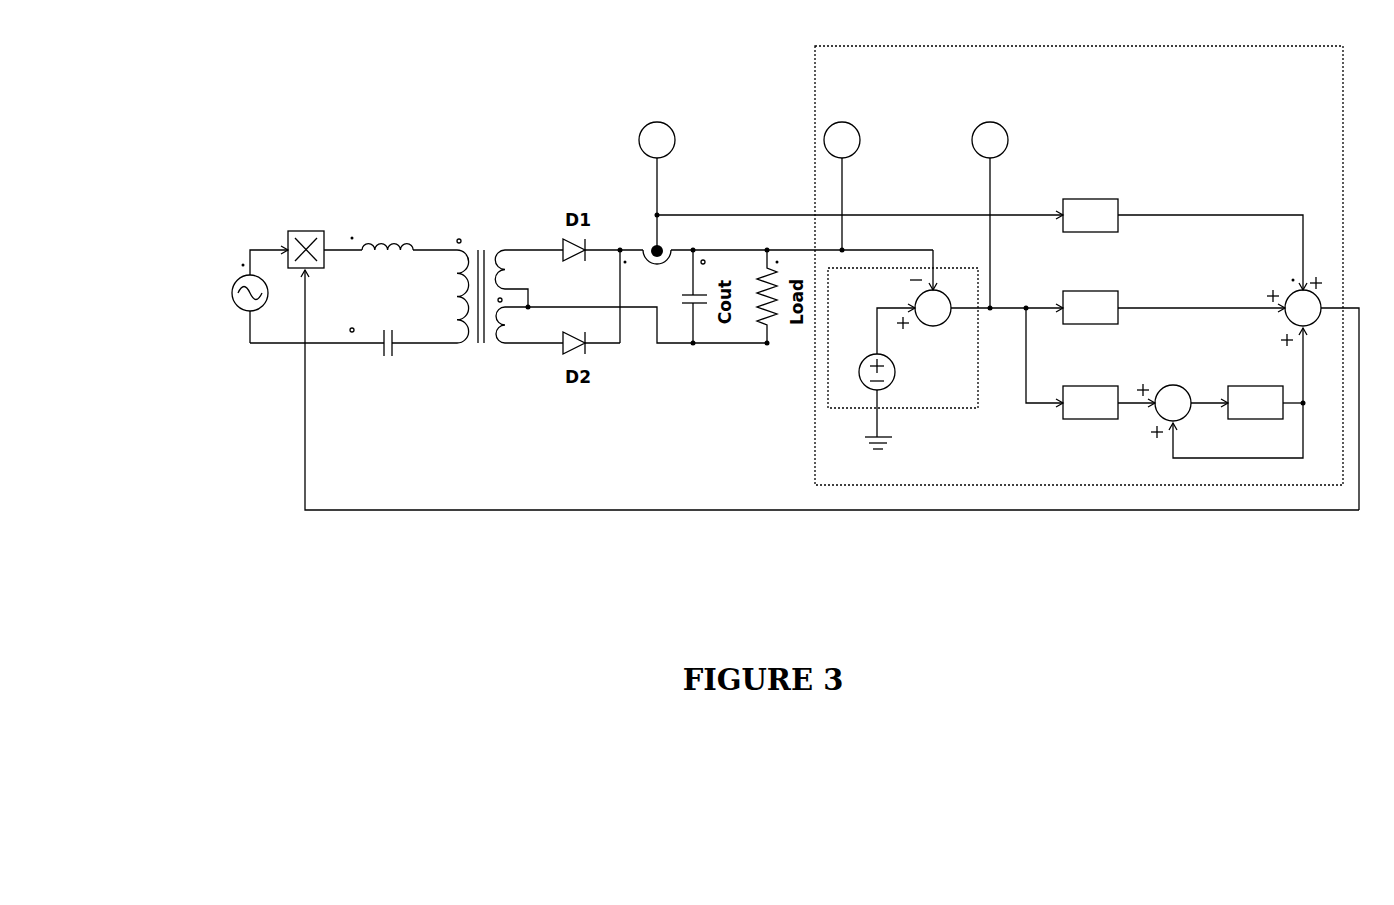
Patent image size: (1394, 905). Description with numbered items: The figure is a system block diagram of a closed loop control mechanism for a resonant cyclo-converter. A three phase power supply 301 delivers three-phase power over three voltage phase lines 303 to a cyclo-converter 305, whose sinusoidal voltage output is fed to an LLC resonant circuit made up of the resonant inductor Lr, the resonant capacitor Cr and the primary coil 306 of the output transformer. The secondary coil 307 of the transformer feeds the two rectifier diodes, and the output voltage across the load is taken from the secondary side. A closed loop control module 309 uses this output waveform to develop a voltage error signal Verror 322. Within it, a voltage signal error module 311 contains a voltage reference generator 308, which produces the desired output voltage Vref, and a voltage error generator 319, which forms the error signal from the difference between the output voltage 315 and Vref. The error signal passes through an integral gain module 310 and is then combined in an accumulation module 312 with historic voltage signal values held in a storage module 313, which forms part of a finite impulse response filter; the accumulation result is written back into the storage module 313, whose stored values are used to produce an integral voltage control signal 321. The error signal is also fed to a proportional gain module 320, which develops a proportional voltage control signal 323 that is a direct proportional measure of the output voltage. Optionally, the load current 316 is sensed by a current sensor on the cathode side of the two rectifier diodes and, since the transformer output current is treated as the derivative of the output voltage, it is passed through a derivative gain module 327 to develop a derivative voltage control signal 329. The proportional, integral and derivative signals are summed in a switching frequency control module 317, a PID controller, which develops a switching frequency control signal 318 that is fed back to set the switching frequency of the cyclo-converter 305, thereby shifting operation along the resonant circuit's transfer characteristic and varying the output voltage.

The three phase power supply 301 is at (205, 340).
The voltage phase lines 303 is at (255, 194).
The cyclo-converter 305 is at (350, 205).
The primary coil 306 is at (355, 327).
The secondary coil 307 is at (505, 227).
The voltage reference generator 308 is at (908, 404).
The closed loop control module 309 is at (1040, 277).
The integral gain module 310 is at (1114, 373).
The voltage signal error module 311 is at (865, 363).
The accumulation module 312 is at (1155, 428).
The storage module 313 is at (1230, 371).
The output voltage 315 is at (874, 157).
The load current 316 is at (694, 156).
The switching frequency control module 317 is at (1327, 371).
The switching frequency control signal 318 is at (832, 424).
The voltage error generator 319 is at (970, 325).
The proportional gain module 320 is at (1116, 278).
The integral voltage control signal 321 is at (1270, 393).
The voltage error signal Verror 322 is at (1022, 186).
The proportional voltage control signal 323 is at (1201, 276).
The derivative gain module 327 is at (1114, 180).
The derivative voltage control signal 329 is at (1210, 222).